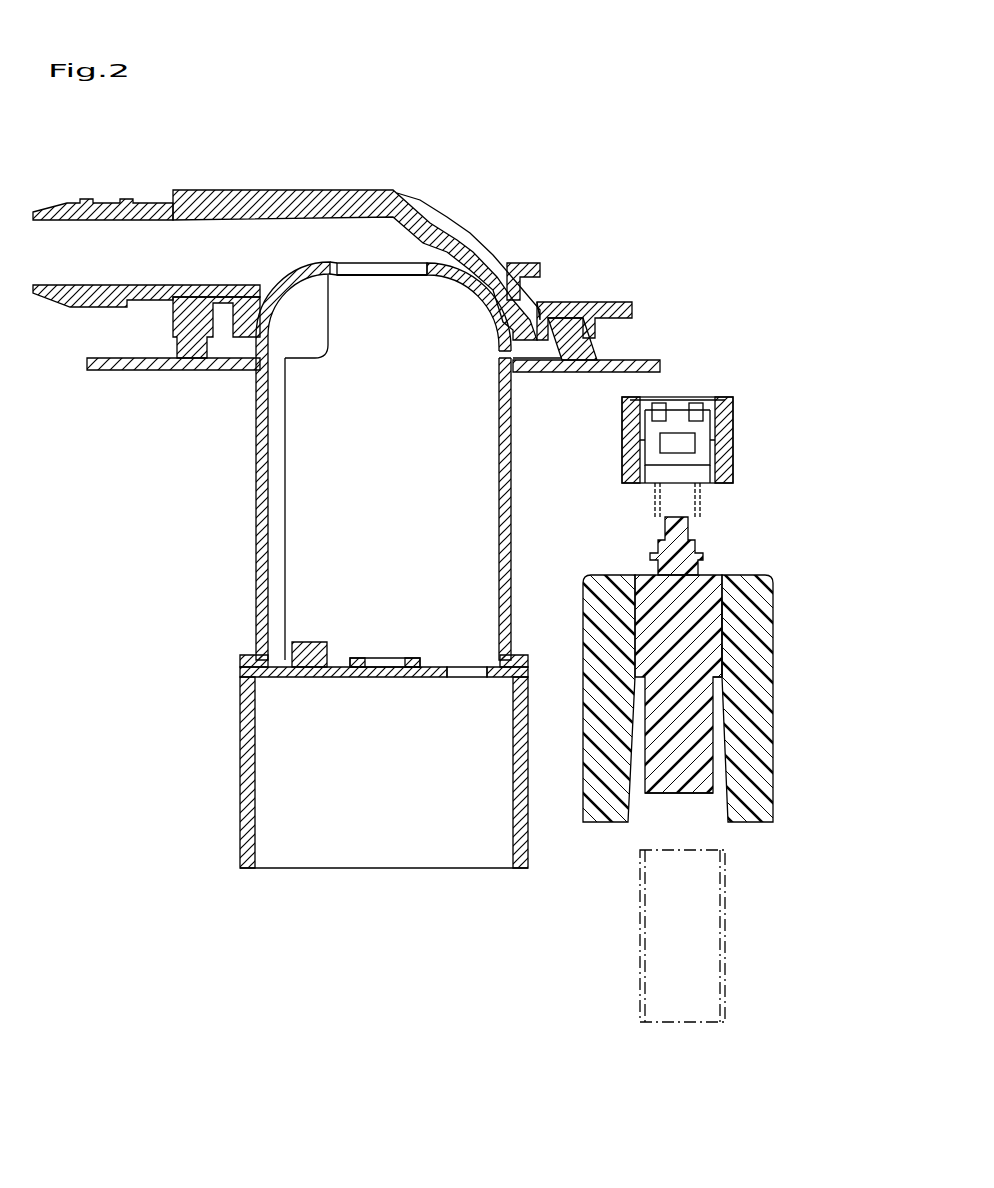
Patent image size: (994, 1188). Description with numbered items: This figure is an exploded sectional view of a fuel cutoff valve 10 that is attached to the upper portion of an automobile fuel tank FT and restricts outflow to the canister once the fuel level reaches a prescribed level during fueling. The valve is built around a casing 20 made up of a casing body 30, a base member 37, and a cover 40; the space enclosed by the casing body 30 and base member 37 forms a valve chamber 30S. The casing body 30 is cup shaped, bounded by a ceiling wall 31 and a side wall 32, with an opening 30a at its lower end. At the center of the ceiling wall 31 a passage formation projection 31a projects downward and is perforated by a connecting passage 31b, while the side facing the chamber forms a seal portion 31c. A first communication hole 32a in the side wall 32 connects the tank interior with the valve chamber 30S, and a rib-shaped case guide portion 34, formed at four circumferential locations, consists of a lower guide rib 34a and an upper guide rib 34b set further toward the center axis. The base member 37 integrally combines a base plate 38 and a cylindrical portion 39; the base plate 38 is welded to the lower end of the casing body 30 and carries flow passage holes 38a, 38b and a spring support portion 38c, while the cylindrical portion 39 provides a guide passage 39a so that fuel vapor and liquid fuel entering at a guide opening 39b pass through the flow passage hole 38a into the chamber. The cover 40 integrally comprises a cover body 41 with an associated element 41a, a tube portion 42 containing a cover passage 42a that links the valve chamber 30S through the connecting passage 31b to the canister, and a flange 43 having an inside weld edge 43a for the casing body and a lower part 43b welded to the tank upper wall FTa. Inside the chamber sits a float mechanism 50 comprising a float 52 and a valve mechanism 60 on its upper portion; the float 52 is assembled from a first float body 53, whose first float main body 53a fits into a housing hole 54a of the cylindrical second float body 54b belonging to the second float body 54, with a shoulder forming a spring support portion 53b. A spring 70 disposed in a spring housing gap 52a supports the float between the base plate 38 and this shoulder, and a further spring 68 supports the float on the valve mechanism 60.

The fuel cutoff valve 10 is at (582, 144).
The casing 20 is at (158, 515).
The casing body 30 is at (256, 543).
The valve chamber 30S is at (470, 521).
The opening 30a is at (472, 658).
The ceiling wall 31 is at (322, 263).
The passage formation projection 31a is at (338, 267).
The connecting passage 31b is at (398, 267).
The seal portion 31c is at (338, 272).
The side wall 32 is at (513, 617).
The first communication hole 32a is at (499, 360).
The case guide portion 34 is at (393, 368).
The lower guide rib 34a is at (287, 423).
The upper guide rib 34b is at (330, 350).
The base member 37 is at (243, 668).
The base plate 38 is at (527, 677).
The flow passage hole 38a is at (372, 662).
The flow passage hole 38b is at (453, 667).
The spring support portion 38c is at (337, 667).
The cylindrical portion 39 is at (528, 852).
The guide passage 39a is at (493, 808).
The guide opening 39b is at (437, 868).
The cover 40 is at (325, 190).
The cover body 41 is at (538, 302).
The cover inner layer 41a is at (378, 238).
The tube portion 42 is at (281, 190).
The cover passage 42a is at (68, 205).
The flange 43 is at (685, 270).
The inside weld edge 43a is at (552, 302).
The flange lower portion 43b is at (574, 343).
The fuel tank FT is at (373, 412).
The tank upper wall FTa is at (595, 366).
The float mechanism 50 is at (807, 366).
The float 52 is at (823, 545).
The spring housing gap 52a is at (716, 744).
The first float body 53 is at (708, 582).
The first float main body 53a is at (724, 620).
The spring support portion 53b is at (721, 678).
The second float body 54 is at (765, 590).
The housing hole 54a is at (718, 660).
The second float body 54b is at (755, 677).
The valve mechanism 60 is at (732, 433).
The spring 68 is at (702, 502).
The spring 70 is at (723, 905).